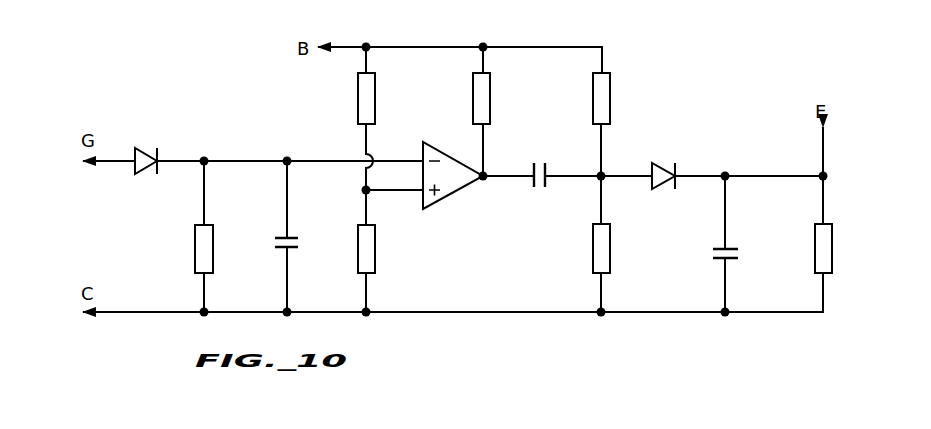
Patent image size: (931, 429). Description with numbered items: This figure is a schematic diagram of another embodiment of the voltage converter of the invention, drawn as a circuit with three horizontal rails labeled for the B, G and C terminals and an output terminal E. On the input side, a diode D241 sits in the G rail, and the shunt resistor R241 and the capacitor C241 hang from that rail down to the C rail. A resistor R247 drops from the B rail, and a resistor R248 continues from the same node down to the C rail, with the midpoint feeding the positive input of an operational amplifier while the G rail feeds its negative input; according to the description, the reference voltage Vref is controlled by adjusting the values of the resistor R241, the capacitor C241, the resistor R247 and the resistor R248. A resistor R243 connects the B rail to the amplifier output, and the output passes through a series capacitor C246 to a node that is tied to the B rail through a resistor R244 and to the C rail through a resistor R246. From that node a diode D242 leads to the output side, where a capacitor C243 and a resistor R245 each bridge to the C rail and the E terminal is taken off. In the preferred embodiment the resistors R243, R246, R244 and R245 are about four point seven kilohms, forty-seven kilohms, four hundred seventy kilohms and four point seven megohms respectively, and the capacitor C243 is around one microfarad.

The diode D241 is at (152, 176).
The resistor R241 is at (174, 249).
The capacitor C241 is at (285, 189).
The resistor R247 is at (394, 98).
The resistor R248 is at (394, 249).
The resistor R243 is at (509, 98).
The resistor R244 is at (629, 98).
The capacitor C246 is at (540, 190).
The diode D242 is at (661, 162).
The resistor R246 is at (629, 248).
The capacitor C243 is at (746, 239).
The resistor R245 is at (852, 248).